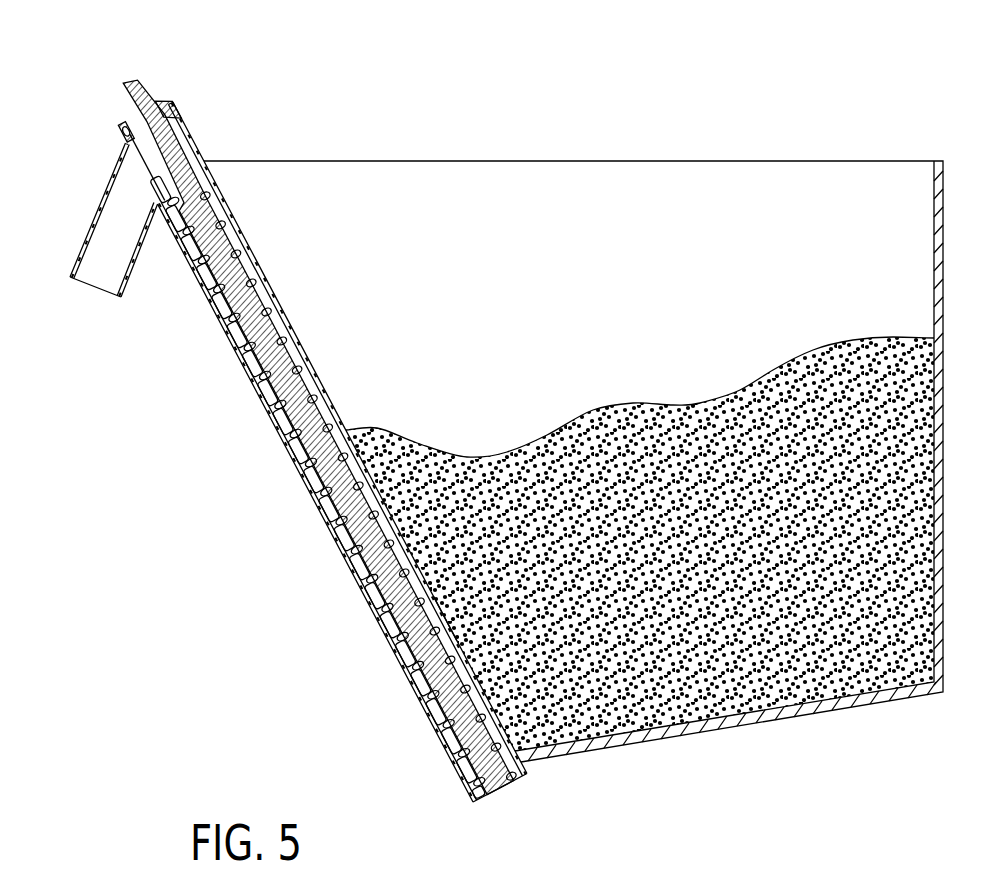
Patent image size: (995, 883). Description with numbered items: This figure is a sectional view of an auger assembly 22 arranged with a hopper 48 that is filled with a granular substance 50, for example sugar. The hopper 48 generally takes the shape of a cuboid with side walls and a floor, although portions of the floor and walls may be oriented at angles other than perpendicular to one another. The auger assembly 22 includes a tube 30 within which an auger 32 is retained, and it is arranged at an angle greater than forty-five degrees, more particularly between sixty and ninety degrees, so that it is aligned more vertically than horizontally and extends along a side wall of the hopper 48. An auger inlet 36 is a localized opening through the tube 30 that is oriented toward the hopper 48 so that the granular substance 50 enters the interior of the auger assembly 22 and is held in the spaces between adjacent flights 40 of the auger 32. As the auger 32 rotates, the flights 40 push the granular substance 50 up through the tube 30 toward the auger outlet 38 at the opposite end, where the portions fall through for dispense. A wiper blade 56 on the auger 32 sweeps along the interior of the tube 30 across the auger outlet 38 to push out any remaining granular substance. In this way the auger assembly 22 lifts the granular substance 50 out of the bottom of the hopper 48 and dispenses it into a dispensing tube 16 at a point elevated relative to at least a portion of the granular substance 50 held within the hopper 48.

The dispensing tube 16 is at (84, 236).
The auger assembly 22 is at (268, 470).
The tube 30 is at (222, 328).
The auger 32 is at (278, 372).
The auger inlet 36 is at (478, 636).
The auger outlet 38 is at (148, 178).
The flights 40 is at (300, 362).
The hopper 48 is at (626, 156).
The granular substance 50 is at (722, 544).
The wiper blade 56 is at (127, 157).